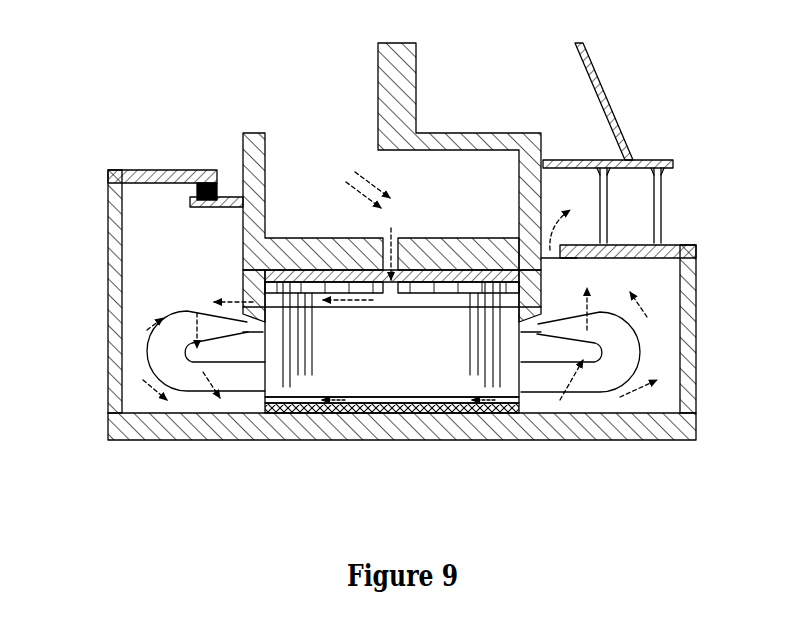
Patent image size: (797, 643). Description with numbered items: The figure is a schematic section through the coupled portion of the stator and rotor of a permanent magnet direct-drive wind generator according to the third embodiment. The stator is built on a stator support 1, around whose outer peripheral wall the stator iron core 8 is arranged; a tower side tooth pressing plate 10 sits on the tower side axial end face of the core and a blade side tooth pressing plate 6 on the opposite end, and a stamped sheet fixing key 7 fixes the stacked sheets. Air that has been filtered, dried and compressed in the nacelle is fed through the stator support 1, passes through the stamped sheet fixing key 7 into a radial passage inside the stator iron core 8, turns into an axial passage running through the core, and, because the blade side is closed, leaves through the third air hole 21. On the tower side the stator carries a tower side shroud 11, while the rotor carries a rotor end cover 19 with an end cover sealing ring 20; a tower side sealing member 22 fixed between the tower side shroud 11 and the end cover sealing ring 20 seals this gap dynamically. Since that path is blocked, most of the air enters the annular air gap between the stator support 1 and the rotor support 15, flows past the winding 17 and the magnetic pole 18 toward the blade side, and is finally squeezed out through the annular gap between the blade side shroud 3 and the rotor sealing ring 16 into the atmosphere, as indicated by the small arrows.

The stator support 1 is at (304, 166).
The blade side shroud 3 is at (541, 265).
The blade side tooth pressing plate 6 is at (413, 391).
The stamped sheet fixing key 7 is at (366, 393).
The stator iron core 8 is at (385, 392).
The tower side tooth pressing plate 10 is at (204, 408).
The tower side shroud 11 is at (192, 205).
The rotor support 15 is at (402, 459).
The rotor sealing ring 16 is at (575, 250).
The winding 17 is at (622, 355).
The magnetic pole 18 is at (392, 451).
The rotor end cover 19 is at (361, 274).
The end cover sealing ring 20 is at (129, 135).
The third air hole 21 is at (245, 298).
The tower side sealing member 22 is at (197, 193).